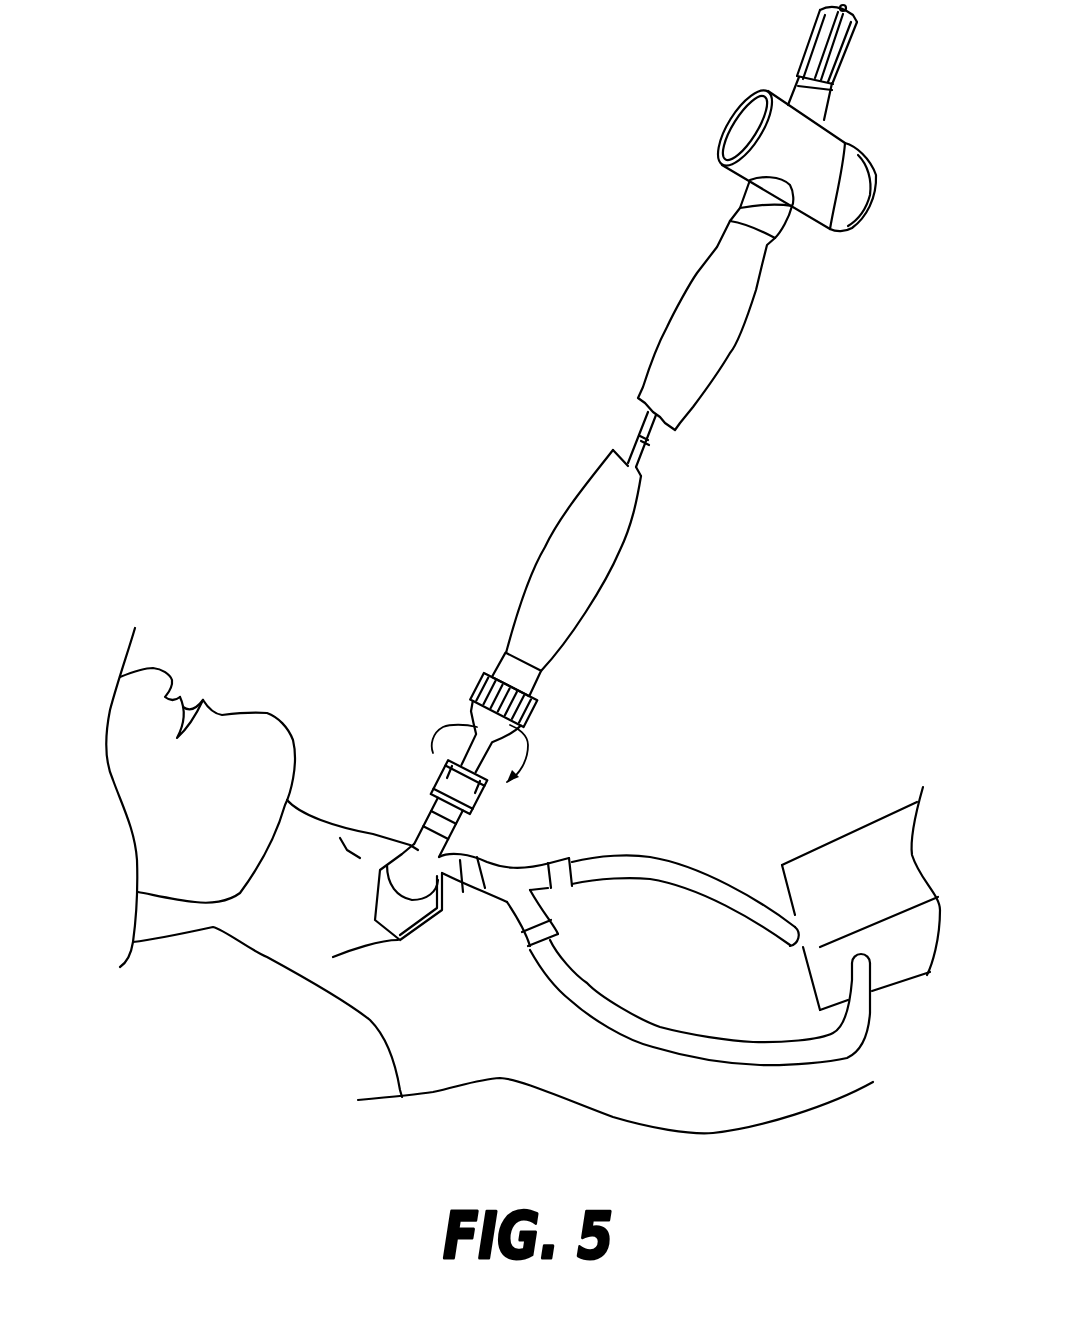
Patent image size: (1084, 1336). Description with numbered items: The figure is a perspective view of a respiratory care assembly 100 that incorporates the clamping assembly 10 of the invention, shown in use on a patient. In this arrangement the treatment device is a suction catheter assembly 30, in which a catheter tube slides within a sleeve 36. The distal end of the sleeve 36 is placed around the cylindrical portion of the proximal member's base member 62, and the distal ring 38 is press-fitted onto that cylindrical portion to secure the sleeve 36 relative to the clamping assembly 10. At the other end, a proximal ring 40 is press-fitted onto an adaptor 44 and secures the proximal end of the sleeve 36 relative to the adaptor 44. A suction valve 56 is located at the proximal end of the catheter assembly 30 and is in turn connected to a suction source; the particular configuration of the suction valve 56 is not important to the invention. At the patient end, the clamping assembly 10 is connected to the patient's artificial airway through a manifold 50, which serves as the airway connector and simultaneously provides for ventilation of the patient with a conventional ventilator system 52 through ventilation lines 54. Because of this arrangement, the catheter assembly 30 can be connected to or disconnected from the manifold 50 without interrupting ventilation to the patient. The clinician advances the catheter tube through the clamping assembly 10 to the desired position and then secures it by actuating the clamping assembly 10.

The respiratory care assembly 100 is at (366, 362).
The clamping assembly 10 is at (433, 657).
The catheter assembly 30 is at (738, 582).
The sleeve 36 is at (677, 337).
The distal ring 38 is at (534, 678).
The proximal ring 40 is at (743, 212).
The adaptor 44 is at (750, 188).
The manifold 50 is at (418, 845).
The ventilator system 52 is at (860, 853).
The ventilation lines 54 is at (658, 872).
The suction valve 56 is at (776, 108).
The base member 62 is at (500, 724).